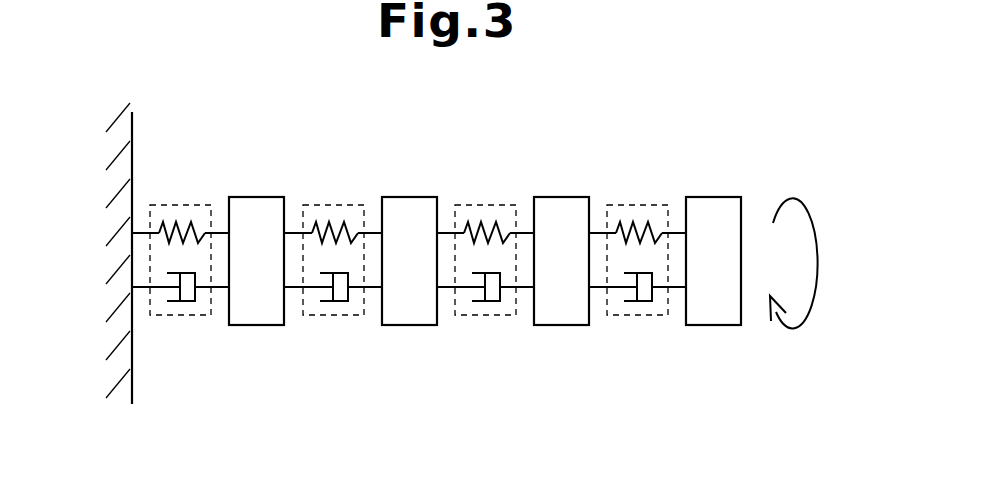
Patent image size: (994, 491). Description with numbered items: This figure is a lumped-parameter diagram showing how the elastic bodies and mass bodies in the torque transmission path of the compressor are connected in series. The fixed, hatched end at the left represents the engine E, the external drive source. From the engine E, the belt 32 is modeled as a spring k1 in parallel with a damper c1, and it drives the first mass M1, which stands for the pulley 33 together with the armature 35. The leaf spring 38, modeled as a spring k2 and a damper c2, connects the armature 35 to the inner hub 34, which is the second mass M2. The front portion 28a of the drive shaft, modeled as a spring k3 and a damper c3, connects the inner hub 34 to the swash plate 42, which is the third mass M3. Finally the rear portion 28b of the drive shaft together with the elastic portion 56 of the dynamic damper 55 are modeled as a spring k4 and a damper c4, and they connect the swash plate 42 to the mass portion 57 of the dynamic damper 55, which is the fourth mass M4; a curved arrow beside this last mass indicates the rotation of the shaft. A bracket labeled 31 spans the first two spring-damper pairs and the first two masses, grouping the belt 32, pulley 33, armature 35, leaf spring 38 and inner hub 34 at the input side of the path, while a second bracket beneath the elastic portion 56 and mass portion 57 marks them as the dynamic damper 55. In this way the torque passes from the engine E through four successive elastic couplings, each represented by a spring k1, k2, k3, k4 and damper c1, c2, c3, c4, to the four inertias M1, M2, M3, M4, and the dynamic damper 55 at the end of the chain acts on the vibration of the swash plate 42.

The vibration system portion (first and second mass-spring stages) 31 is at (310, 237).
The belt 32 is at (188, 261).
The pulley 33 is at (253, 257).
The armature 35 is at (253, 257).
The inner hub 34 is at (409, 263).
The leaf spring 38 is at (339, 262).
The swash plate 42 is at (561, 263).
The front portion of the drive shaft 28a is at (486, 262).
The rear portion of the drive shaft 28b is at (637, 278).
The elastic portion 56 is at (637, 278).
The mass portion 57 is at (718, 263).
The dynamic damper 55 is at (669, 295).
The engine E is at (132, 382).
The spring k1 is at (168, 222).
The spring k2 is at (320, 222).
The spring k3 is at (471, 222).
The spring k4 is at (620, 222).
The damper c1 is at (195, 302).
The damper c2 is at (348, 302).
The damper c3 is at (500, 302).
The damper c4 is at (653, 302).
The mass M1 is at (256, 325).
The mass M2 is at (412, 326).
The mass M3 is at (557, 326).
The mass M4 is at (718, 287).